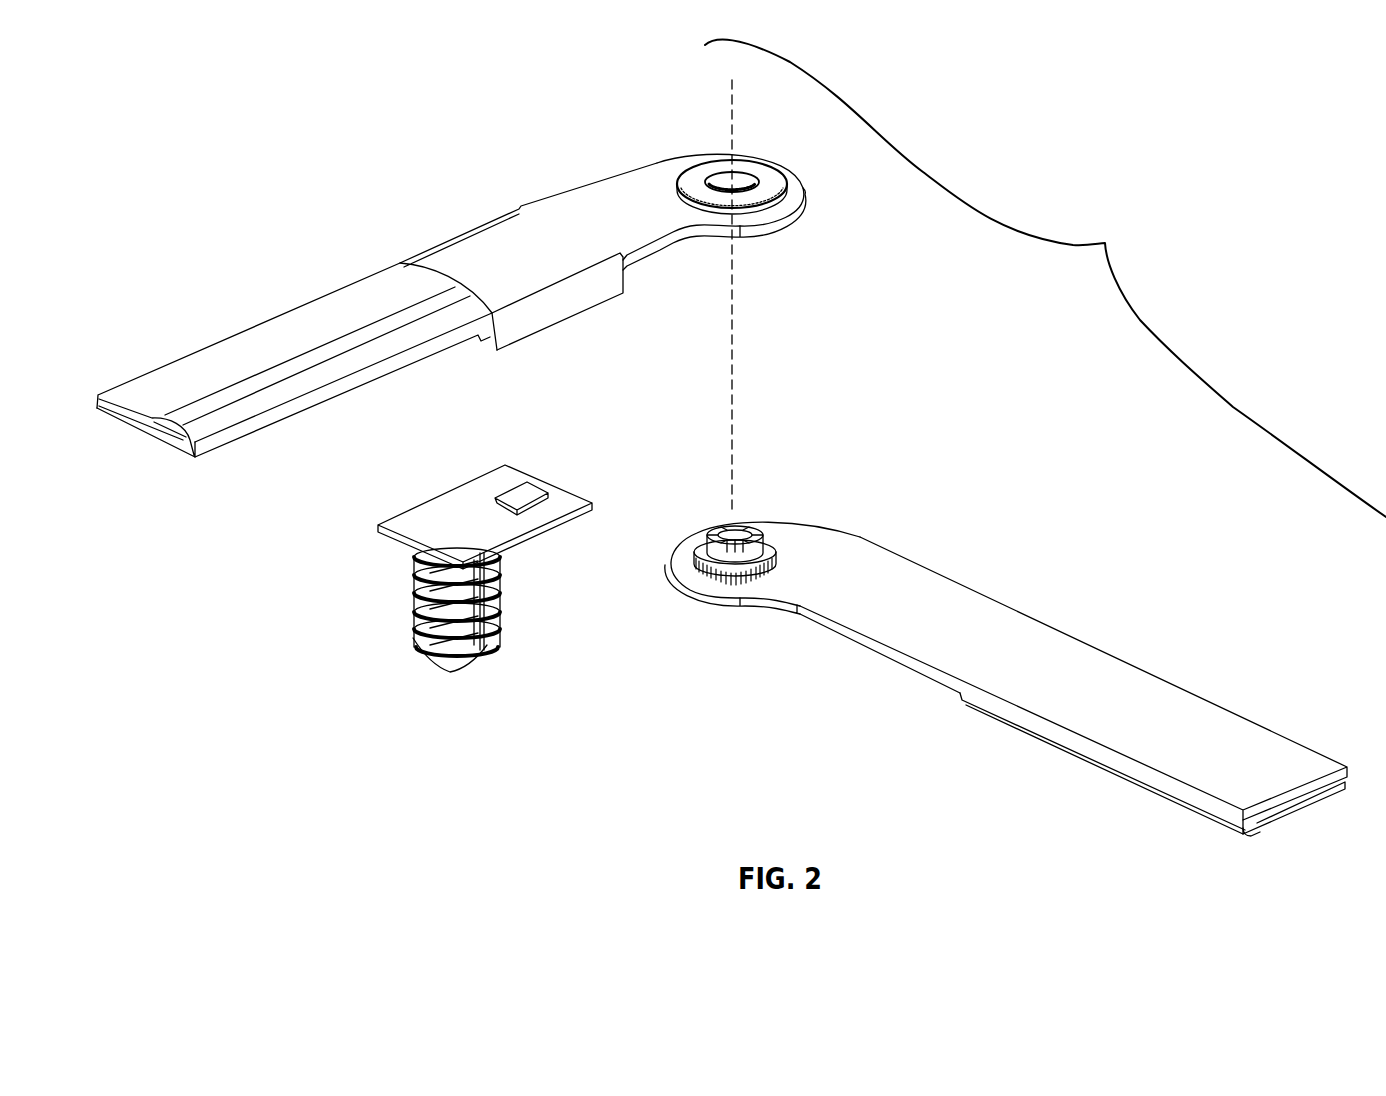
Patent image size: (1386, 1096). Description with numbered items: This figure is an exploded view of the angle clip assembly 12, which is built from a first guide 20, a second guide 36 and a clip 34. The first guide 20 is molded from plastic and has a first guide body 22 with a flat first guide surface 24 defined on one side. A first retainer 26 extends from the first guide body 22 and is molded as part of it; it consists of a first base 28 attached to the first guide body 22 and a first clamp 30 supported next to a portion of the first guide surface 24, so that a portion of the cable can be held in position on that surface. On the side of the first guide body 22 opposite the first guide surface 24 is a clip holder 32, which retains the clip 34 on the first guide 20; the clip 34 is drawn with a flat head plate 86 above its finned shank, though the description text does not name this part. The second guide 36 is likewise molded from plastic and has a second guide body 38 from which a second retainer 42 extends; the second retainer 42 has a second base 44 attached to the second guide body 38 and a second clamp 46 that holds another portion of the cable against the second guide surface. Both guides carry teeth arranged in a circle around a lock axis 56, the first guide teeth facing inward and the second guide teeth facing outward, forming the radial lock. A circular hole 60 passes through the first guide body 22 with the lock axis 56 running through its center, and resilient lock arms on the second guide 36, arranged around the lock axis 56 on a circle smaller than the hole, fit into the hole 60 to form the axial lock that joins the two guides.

The angle clip assembly 12 is at (1045, 278).
The first guide 20 is at (590, 172).
The first guide body 22 is at (183, 451).
The first guide surface 24 is at (503, 228).
The first retainer 26 is at (372, 358).
The first base 28 is at (330, 395).
The first clamp 30 is at (178, 375).
The clip holder 32 is at (583, 302).
The clip 34 is at (483, 650).
The second guide 36 is at (838, 642).
The second guide body 38 is at (980, 588).
The second retainer 42 is at (1253, 838).
The second base 44 is at (1143, 780).
The second clamp 46 is at (1312, 805).
The lock axis 56 is at (735, 360).
The hole 60 is at (719, 177).
The fastener head plate 86 is at (565, 499).